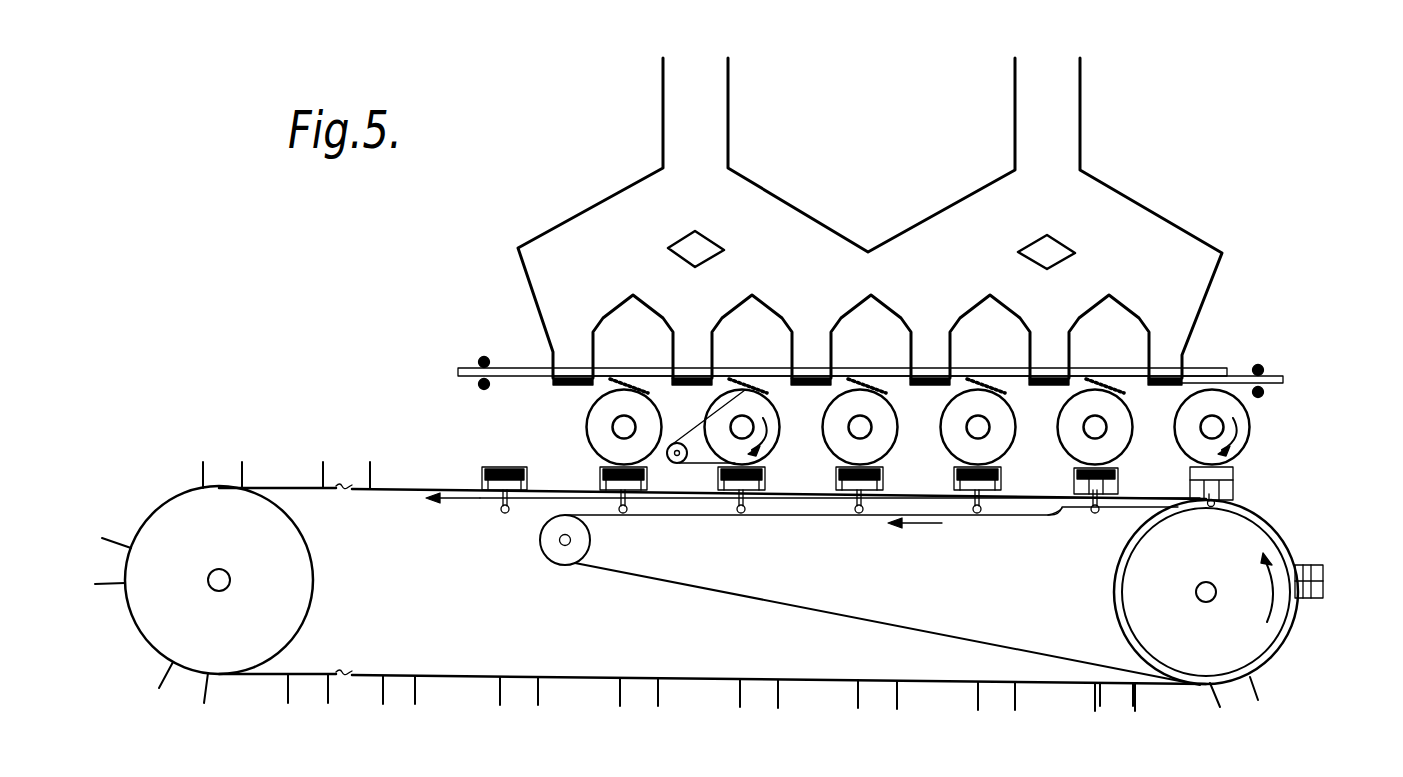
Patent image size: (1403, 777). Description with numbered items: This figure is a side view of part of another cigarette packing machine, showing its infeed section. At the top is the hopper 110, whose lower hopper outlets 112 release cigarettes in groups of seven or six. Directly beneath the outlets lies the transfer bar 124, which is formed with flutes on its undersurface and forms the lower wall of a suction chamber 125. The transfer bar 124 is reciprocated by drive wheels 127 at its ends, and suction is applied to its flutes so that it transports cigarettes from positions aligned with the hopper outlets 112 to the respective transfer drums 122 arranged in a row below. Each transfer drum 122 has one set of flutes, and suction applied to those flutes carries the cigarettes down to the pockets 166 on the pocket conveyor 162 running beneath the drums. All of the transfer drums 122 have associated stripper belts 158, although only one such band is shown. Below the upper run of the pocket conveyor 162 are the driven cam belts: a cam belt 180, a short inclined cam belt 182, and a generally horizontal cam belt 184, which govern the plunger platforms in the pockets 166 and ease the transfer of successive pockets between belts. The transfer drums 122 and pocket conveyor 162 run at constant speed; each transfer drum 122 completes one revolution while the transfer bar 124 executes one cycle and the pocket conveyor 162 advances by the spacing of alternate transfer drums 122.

The hopper 110 is at (1135, 200).
The hopper outlets 112 is at (672, 350).
The transfer drums 122 is at (587, 419).
The transfer bar 124 is at (523, 370).
The suction chamber 125 is at (1196, 369).
The drive wheels 127 is at (480, 384).
The stripper belts 158 is at (692, 462).
The pocket conveyor 162 is at (1297, 635).
The pockets 166 is at (410, 486).
The cam belt 180 is at (1130, 510).
The inclined cam belt 182 is at (1053, 513).
The horizontal cam belt 184 is at (957, 515).